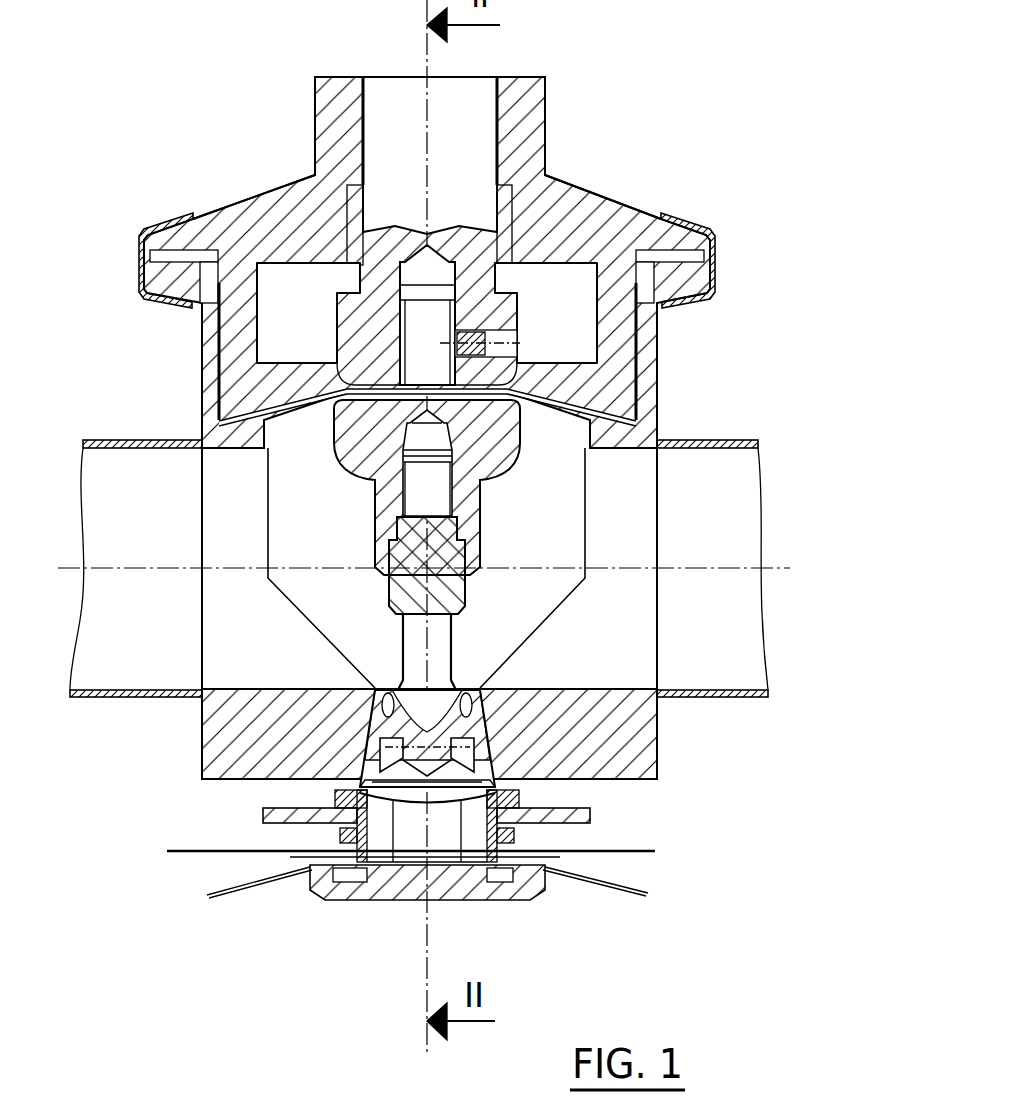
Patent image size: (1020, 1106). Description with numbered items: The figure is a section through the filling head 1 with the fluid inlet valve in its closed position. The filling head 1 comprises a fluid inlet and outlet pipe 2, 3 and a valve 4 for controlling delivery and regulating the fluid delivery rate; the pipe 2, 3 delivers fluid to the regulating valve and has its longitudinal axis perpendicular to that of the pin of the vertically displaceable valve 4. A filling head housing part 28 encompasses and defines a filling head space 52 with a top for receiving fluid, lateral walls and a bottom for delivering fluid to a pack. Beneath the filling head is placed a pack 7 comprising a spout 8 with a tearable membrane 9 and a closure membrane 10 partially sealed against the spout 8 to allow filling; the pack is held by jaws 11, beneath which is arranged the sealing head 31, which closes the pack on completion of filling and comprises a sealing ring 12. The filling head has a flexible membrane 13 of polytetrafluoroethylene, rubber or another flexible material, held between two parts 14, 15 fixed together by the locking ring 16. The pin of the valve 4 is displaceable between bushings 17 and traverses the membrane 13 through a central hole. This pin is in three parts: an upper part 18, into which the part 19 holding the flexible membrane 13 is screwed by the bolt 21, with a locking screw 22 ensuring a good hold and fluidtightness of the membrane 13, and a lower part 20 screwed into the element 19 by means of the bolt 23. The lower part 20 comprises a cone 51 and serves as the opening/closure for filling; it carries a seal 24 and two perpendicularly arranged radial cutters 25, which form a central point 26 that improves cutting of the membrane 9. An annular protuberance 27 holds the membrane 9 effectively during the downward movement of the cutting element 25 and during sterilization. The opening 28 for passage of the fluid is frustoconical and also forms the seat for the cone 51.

The filling head 1 is at (676, 415).
The fluid inlet pipe 2 is at (712, 568).
The fluid outlet pipe 3 is at (136, 568).
The valve 4 is at (483, 536).
The pack 7 is at (610, 887).
The spout 8 is at (512, 833).
The tearable membrane 9 is at (393, 802).
The closure membrane 10 is at (452, 857).
The jaws 11 is at (587, 809).
The sealing ring 12 is at (499, 874).
The flexible membrane 13 is at (277, 418).
The filling head part 14 is at (643, 233).
The filling head part 15 is at (648, 333).
The locking ring 16 is at (686, 220).
The bushings 17 is at (503, 196).
The upper part of the pin 18 is at (453, 108).
The membrane-holding part 19 is at (502, 423).
The lower part of the pin 20 is at (440, 645).
The bolt 21 is at (456, 287).
The locking screw 22 is at (503, 342).
The bolt 23 is at (455, 487).
The seal 24 is at (478, 700).
The radial cutters 25 is at (360, 786).
The central point 26 is at (372, 782).
The annular protuberance 27 is at (493, 787).
The opening 28 is at (482, 748).
The sealing head 31 is at (322, 878).
The cone 51 is at (430, 768).
The filling head space 52 is at (410, 775).